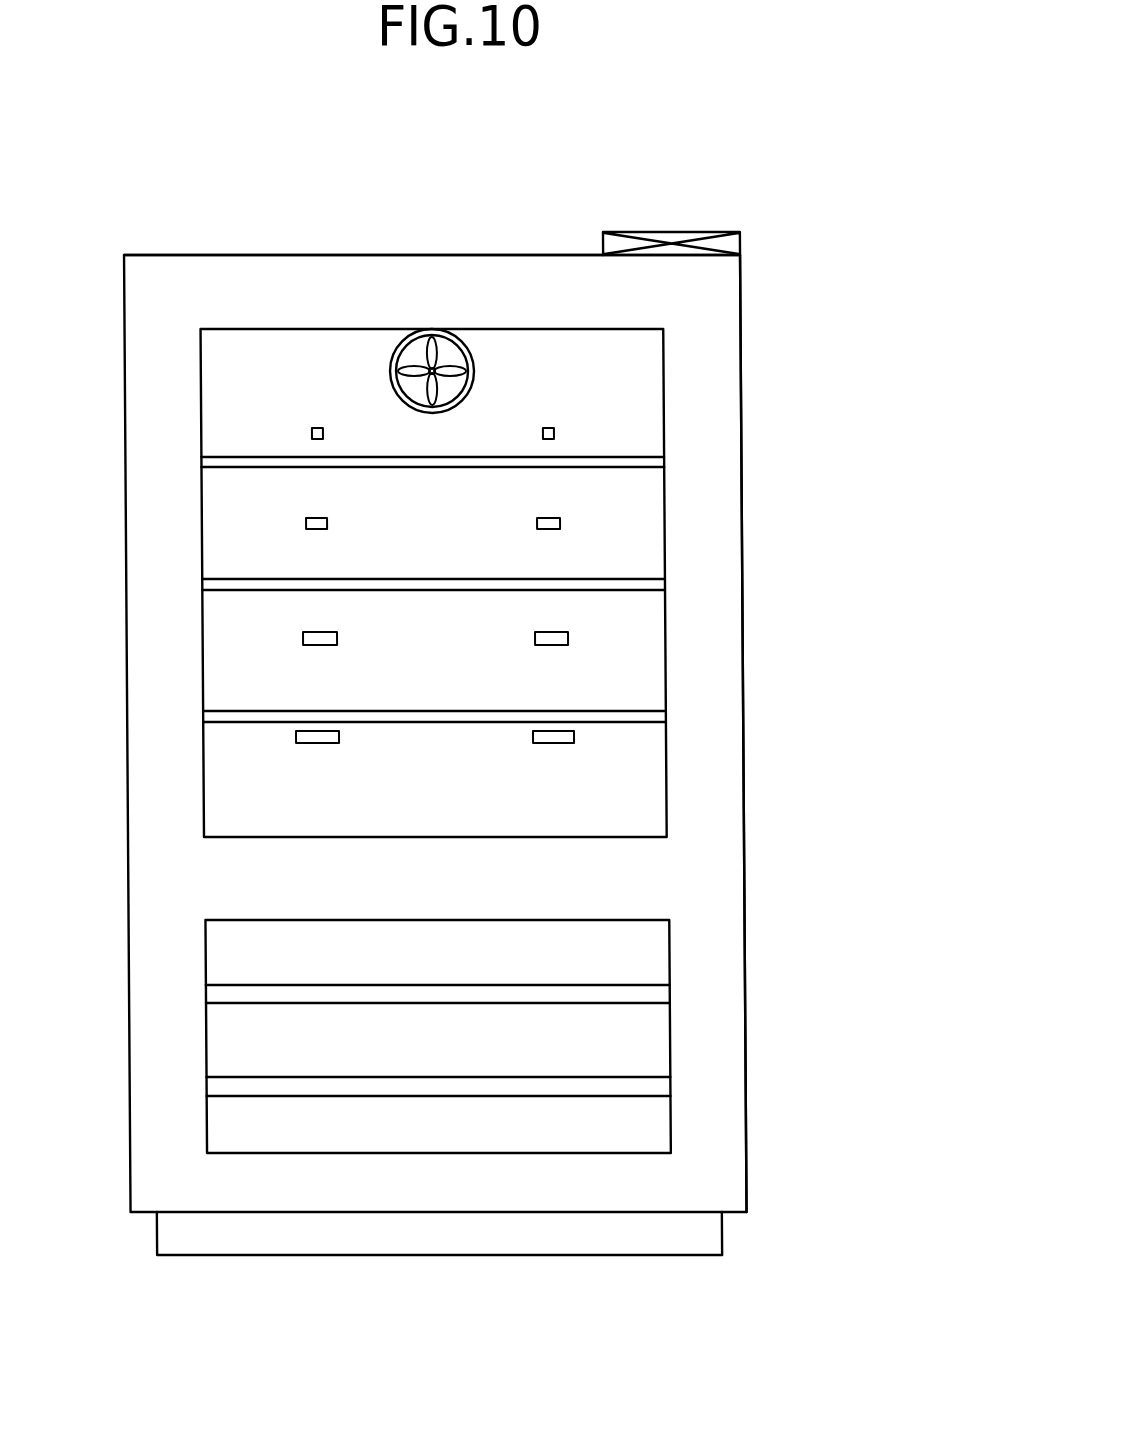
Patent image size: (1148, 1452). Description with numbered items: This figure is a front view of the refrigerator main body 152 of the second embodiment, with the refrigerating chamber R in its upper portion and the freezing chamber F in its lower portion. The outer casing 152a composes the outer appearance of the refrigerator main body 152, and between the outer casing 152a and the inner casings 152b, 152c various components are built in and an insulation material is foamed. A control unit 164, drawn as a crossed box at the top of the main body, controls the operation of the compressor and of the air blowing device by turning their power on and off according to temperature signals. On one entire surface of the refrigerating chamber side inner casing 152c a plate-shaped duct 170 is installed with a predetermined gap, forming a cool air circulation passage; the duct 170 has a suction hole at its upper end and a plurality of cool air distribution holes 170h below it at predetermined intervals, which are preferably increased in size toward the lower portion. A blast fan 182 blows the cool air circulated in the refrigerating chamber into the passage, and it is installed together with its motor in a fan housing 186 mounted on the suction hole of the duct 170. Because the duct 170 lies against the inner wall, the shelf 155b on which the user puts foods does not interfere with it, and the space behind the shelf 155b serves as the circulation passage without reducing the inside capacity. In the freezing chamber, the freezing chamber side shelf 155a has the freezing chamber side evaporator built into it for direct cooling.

The refrigerator main body 152 is at (326, 247).
The outer casing 152a is at (742, 798).
The inner casing 152b is at (647, 948).
The refrigerating chamber side inner casing 152c is at (664, 654).
The freezing chamber side shelf 155a is at (653, 995).
The shelf 155b is at (654, 586).
The control unit 164 is at (666, 238).
The duct 170 is at (638, 376).
The cool air distribution holes 170h is at (553, 432).
The blast fan 182 is at (426, 330).
The fan housing 186 is at (443, 330).